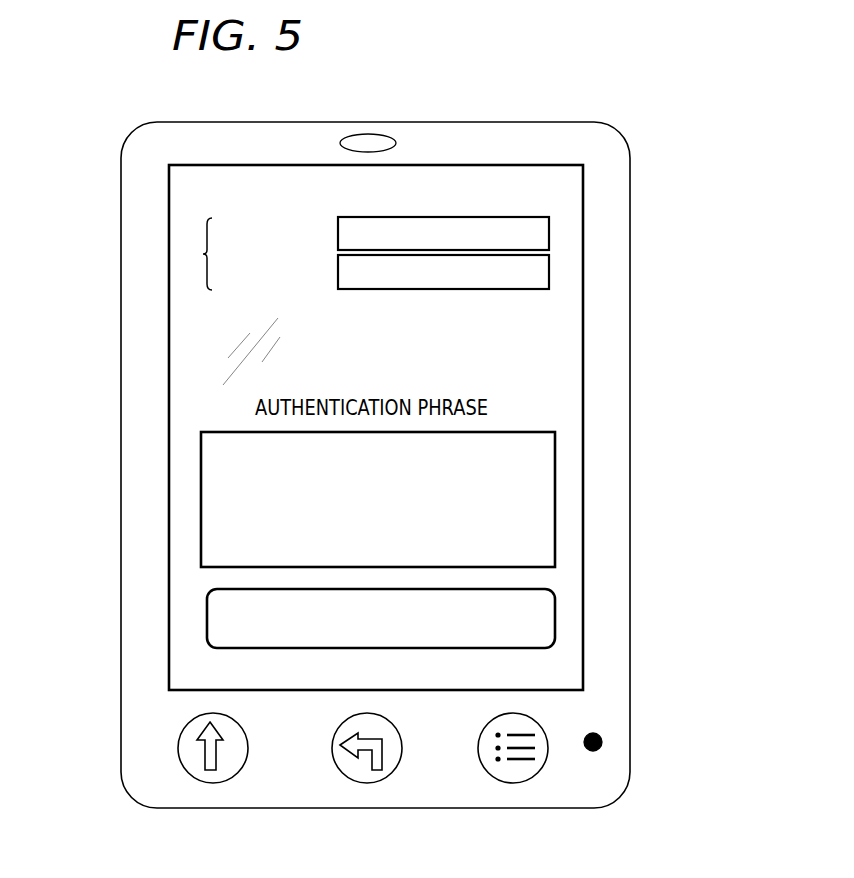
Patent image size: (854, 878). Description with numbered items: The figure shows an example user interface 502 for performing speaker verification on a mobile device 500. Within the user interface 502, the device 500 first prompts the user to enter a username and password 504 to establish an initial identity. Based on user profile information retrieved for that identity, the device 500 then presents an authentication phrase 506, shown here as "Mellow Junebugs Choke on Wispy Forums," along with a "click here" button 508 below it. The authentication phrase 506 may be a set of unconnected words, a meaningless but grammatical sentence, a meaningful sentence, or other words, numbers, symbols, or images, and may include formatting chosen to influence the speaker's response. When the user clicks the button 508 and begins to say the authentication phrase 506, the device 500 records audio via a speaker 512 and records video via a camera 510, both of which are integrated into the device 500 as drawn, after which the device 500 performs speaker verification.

The mobile device 500 is at (630, 362).
The user interface 502 is at (573, 244).
The username and password 504 is at (206, 257).
The authentication phrase 506 is at (200, 487).
The click here button 508 is at (206, 620).
The camera 510 is at (370, 138).
The speaker 512 is at (602, 742).